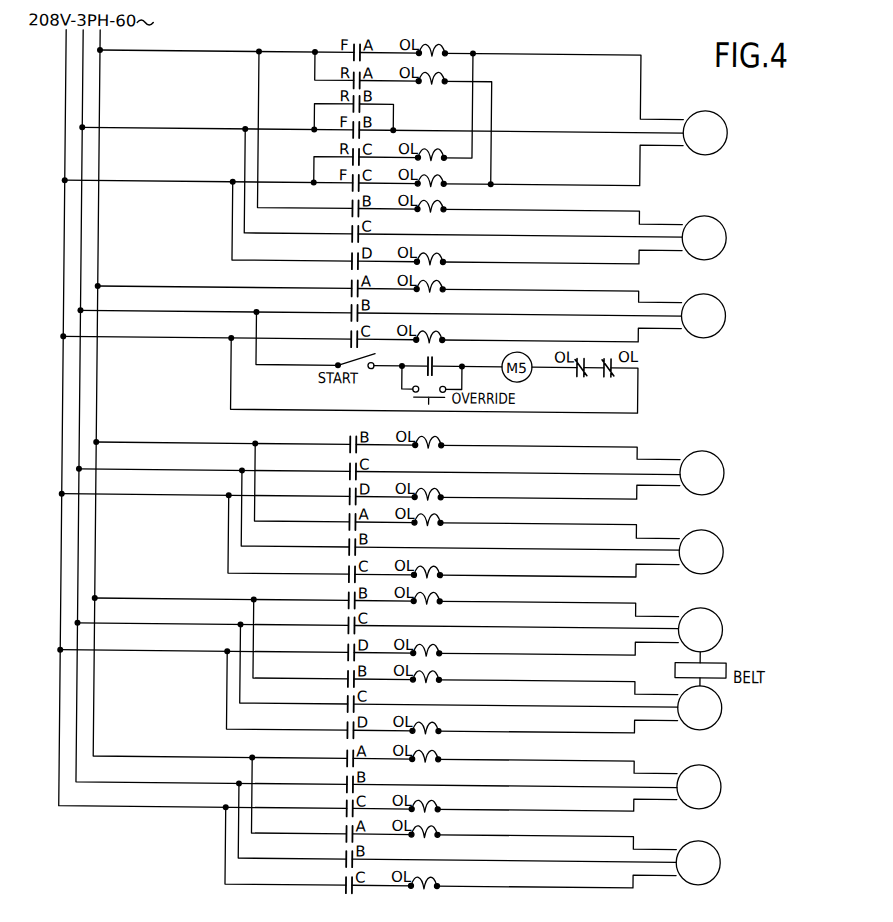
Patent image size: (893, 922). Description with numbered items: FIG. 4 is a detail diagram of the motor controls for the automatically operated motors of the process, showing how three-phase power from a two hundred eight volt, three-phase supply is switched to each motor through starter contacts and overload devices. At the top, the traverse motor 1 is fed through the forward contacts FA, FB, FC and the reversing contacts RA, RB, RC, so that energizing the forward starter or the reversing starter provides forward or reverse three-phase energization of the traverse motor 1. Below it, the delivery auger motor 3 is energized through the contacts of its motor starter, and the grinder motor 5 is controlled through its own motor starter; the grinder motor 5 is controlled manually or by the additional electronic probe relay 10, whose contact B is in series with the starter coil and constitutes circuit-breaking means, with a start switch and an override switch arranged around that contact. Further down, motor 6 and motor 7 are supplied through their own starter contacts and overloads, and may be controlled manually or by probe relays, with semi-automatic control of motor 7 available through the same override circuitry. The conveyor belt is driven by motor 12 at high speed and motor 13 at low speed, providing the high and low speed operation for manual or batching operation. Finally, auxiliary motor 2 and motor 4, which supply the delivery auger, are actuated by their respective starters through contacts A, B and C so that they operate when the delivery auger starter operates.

The electronic probe relay 10 is at (455, 370).
The traverse motor 1 is at (740, 133).
The delivery auger motor 3 is at (740, 238).
The grinder motor 5 is at (735, 316).
The motor 6 is at (743, 474).
The motor 7 is at (738, 548).
The motor 12 is at (738, 633).
The motor 13 is at (724, 708).
The motor 2 is at (741, 785).
The motor 4 is at (753, 858).